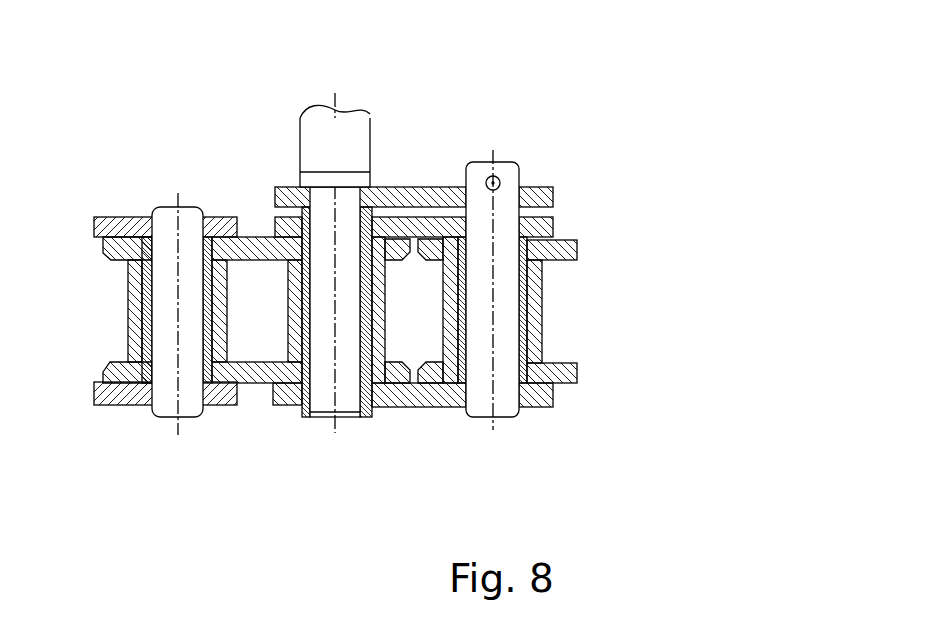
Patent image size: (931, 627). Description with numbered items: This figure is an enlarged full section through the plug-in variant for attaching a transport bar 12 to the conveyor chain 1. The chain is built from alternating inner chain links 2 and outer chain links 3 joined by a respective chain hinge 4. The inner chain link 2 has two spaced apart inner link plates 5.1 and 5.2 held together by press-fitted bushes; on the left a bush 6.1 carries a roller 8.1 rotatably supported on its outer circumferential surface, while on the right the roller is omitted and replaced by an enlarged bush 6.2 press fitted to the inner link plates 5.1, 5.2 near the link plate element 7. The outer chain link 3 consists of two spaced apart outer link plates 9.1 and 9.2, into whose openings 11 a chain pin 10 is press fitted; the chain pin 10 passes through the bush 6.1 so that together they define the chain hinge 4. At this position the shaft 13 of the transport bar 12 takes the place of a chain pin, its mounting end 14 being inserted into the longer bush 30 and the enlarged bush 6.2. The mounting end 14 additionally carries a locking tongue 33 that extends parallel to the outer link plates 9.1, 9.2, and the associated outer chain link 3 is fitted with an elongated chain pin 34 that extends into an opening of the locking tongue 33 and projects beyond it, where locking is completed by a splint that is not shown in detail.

The conveyor chain 1 is at (477, 443).
The inner chain link 2 is at (252, 227).
The outer chain link 3 is at (413, 412).
The chain hinge 4 is at (174, 422).
The inner link plate 5.1 is at (261, 242).
The inner link plate 5.2 is at (245, 386).
The bush 6.1 is at (131, 338).
The enlarged bush 6.2 is at (377, 300).
The inner link plate 7 is at (530, 276).
The roller 8.1 is at (131, 292).
The outer link plate 9.1 is at (112, 222).
The outer link plate 9.2 is at (105, 402).
The chain pin 10 is at (190, 214).
The opening 11 is at (160, 210).
The transport bar 12 is at (292, 120).
The shaft 13 is at (357, 117).
The mounting end 14 is at (313, 313).
The longer bush 30 is at (298, 390).
The locking tongue 33 is at (415, 187).
The elongated chain pin 34 is at (505, 167).